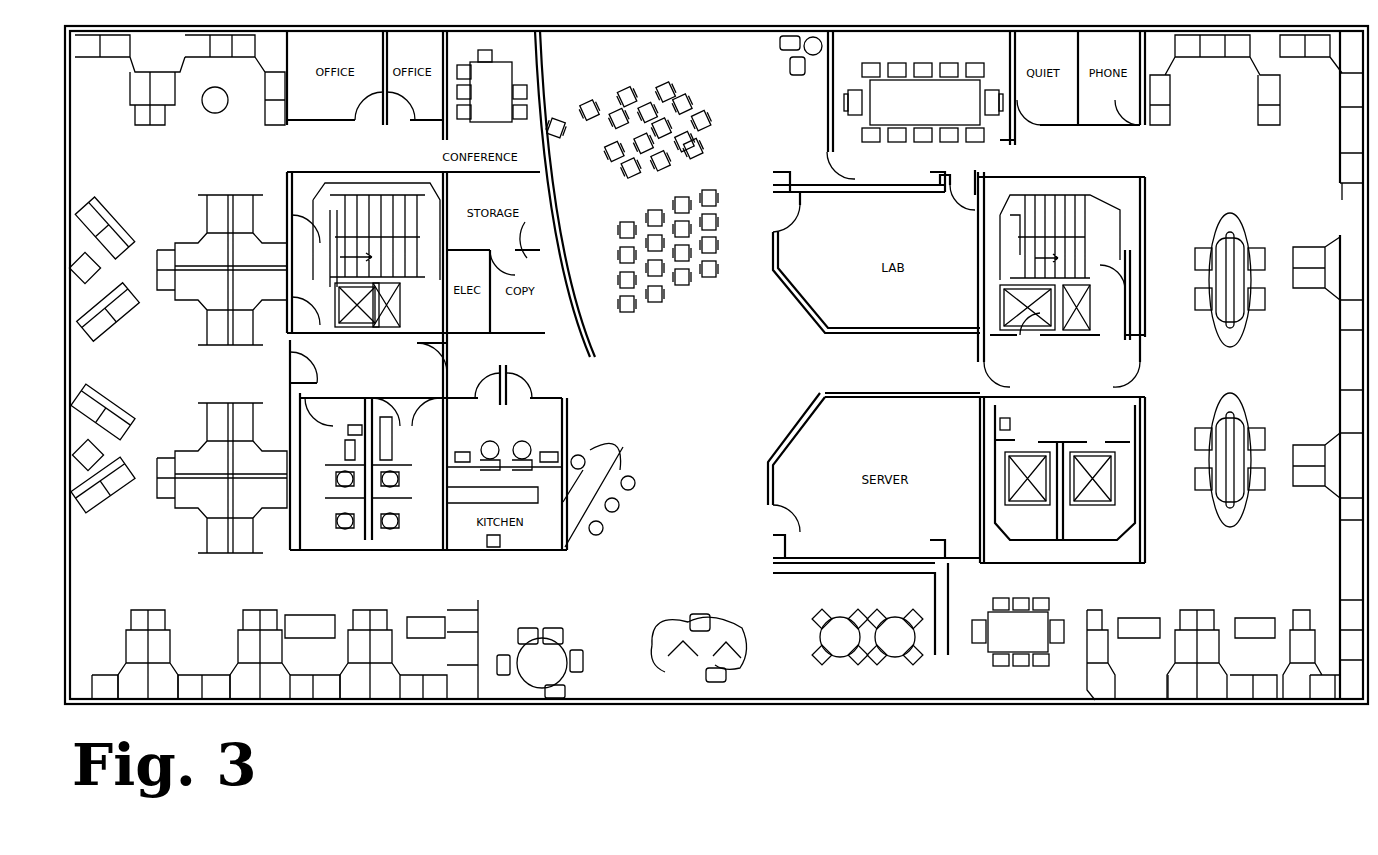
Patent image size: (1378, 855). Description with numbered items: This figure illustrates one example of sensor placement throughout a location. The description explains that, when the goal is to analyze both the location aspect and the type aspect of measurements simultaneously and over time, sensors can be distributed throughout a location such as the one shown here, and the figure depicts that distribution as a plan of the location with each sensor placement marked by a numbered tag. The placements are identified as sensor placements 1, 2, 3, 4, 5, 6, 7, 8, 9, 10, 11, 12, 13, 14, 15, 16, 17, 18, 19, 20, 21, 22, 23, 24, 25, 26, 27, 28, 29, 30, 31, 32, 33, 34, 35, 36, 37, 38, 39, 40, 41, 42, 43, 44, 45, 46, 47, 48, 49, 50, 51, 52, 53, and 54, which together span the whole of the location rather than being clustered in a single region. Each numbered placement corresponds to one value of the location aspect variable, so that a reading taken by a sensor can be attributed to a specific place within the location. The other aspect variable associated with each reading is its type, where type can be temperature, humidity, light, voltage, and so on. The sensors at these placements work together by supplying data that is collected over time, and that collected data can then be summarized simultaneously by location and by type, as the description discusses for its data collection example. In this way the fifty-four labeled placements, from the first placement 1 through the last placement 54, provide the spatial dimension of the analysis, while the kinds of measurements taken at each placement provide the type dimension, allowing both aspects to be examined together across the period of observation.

The open floor area 1 is at (680, 524).
The reception desk 2 is at (599, 491).
The corridor 3 is at (742, 424).
The open area 4 is at (660, 345).
The chair row 5 is at (607, 268).
The chair row 6 is at (732, 252).
The chair rows 7 is at (665, 236).
The chair group 8 is at (608, 135).
The chair group 9 is at (669, 110).
The lounge seating 10 is at (777, 100).
The conference end chair 11 is at (923, 100).
The conference table 12 is at (923, 81).
The conference chairs 13 is at (933, 148).
The corridor area 14 is at (1110, 149).
The workstation 15 is at (1215, 80).
The workstation 16 is at (1311, 68).
The perimeter cabinets 17 is at (1317, 182).
The area 18 is at (1190, 220).
The oval table 19 is at (1231, 280).
The workstation 20 is at (1326, 306).
The oval table 21 is at (1230, 442).
The workstation 22 is at (1315, 470).
The area 23 is at (1175, 529).
The workstation 24 is at (1311, 655).
The workstation 25 is at (1222, 655).
The workstation 26 is at (1123, 655).
The elevator lobby 27 is at (1115, 578).
The meeting table 28 is at (1022, 649).
The area 29 is at (995, 578).
The area 30 is at (948, 677).
The round tables 31 is at (867, 632).
The area 32 is at (785, 677).
The area 33 is at (745, 572).
The lounge sofa 34 is at (698, 652).
The area 35 is at (602, 593).
The round table 36 is at (540, 664).
The kitchen counter 37 is at (504, 516).
The workstation 38 is at (381, 650).
The restrooms 39 is at (368, 504).
The table 40 is at (305, 620).
The workstation 41 is at (259, 655).
The workstation 42 is at (135, 655).
The workstation cluster 43 is at (222, 482).
The sofa 44 is at (100, 487).
The sofa 45 is at (134, 423).
The corridor 46 is at (268, 366).
The lounge seating 47 is at (104, 274).
The workstation cluster 48 is at (222, 270).
The area 49 is at (110, 166).
The workstation 50 is at (180, 80).
The round table 51 is at (240, 103).
The corridor 52 is at (370, 147).
The conference chairs 53 is at (488, 112).
The conference table 54 is at (498, 86).